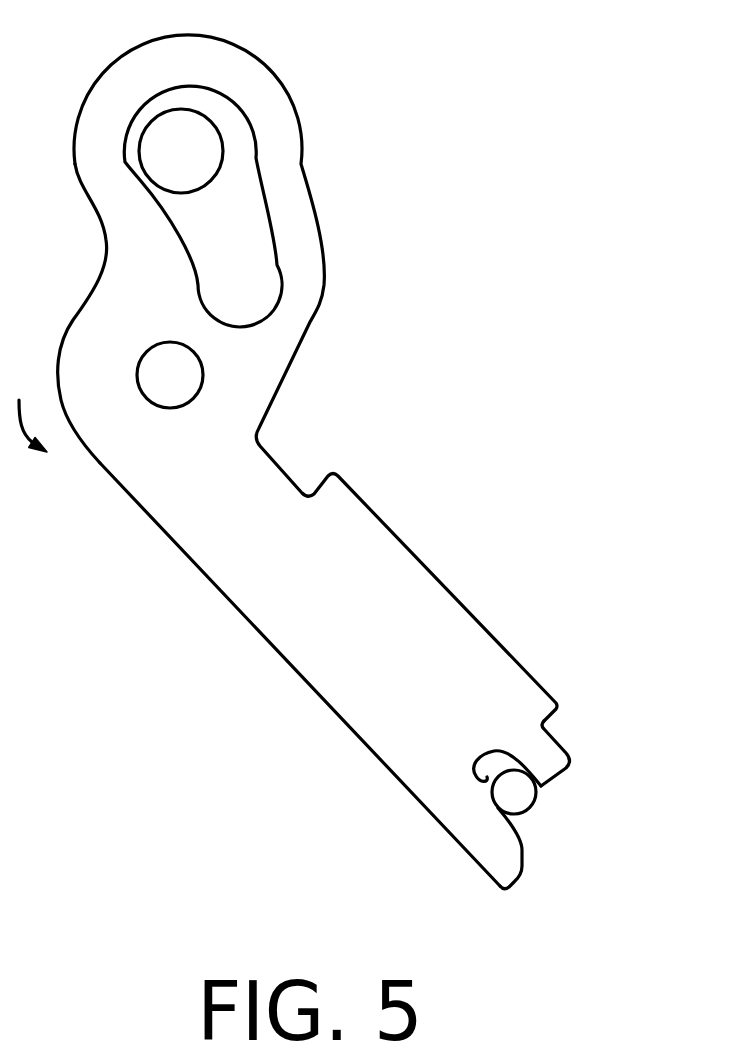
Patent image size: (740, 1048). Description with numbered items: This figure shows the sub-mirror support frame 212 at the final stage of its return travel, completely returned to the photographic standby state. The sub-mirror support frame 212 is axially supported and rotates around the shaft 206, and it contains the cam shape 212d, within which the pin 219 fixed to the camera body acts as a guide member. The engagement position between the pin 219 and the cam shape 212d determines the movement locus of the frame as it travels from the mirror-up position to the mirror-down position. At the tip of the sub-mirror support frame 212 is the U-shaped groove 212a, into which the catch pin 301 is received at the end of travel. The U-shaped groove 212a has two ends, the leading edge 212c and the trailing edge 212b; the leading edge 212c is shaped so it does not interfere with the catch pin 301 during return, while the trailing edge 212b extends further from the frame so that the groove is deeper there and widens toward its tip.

The sub-mirror support frame 212 is at (428, 600).
The U-shaped groove 212a is at (478, 788).
The end of U-shaped groove (trailing edge) 212b is at (518, 877).
The end of U-shaped groove (leading edge) 212c is at (573, 766).
The cam shape 212d is at (258, 300).
The pin 219 is at (249, 168).
The shaft 206 is at (191, 380).
The catch pin 301 is at (534, 810).